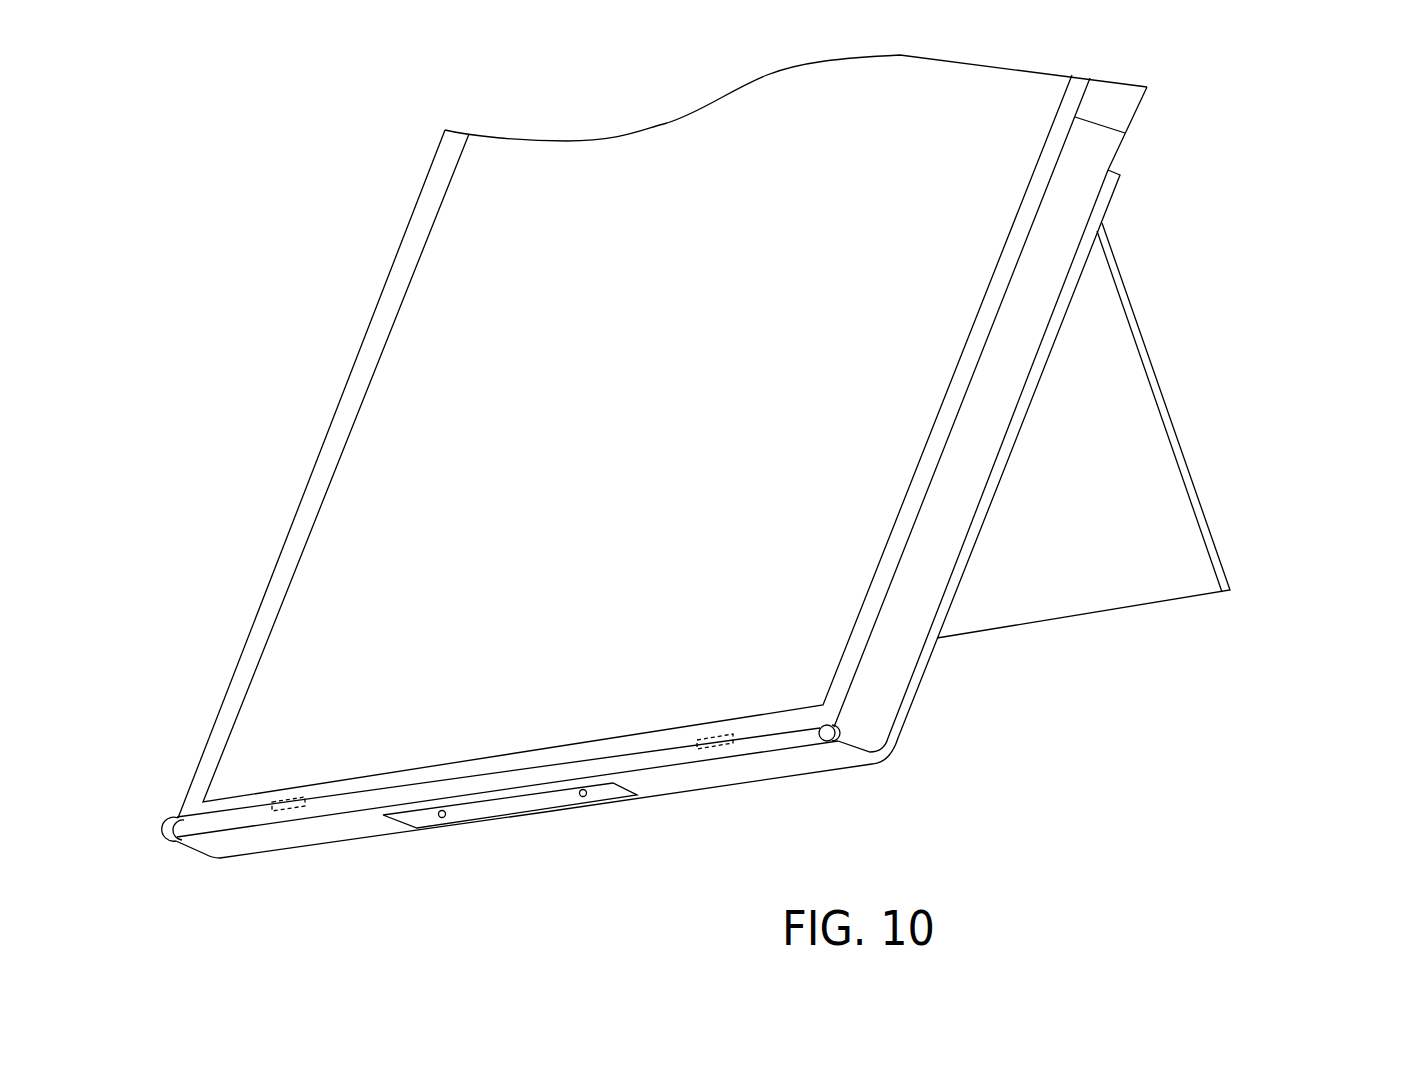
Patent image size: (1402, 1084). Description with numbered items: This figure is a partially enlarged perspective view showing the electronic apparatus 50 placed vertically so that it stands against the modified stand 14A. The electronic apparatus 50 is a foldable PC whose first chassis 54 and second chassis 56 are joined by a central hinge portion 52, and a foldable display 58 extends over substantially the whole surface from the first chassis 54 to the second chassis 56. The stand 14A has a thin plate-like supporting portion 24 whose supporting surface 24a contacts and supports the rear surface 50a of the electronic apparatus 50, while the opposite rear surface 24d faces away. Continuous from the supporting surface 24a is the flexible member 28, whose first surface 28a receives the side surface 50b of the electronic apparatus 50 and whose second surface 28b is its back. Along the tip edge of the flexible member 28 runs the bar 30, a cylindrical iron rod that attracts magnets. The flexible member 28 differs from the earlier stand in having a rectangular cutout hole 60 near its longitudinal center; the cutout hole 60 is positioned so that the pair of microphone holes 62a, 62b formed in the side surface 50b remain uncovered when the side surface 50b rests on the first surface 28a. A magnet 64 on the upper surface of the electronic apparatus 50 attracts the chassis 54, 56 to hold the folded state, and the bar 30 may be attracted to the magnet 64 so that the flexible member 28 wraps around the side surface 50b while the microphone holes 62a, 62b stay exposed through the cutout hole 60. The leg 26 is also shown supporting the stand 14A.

The stand 14A is at (1228, 428).
The supporting portion 24 is at (1070, 320).
The supporting surface 24a is at (942, 595).
The rear surface 24d is at (918, 687).
The support leg 26 is at (1212, 517).
The flexible member 28 is at (316, 838).
The first surface 28a is at (858, 743).
The second surface 28b is at (253, 843).
The bar 30 is at (208, 827).
The electronic apparatus 50 is at (388, 224).
The rear surface 50a is at (982, 495).
The side surface 50b is at (515, 803).
The hinge portion 52 is at (1097, 125).
The first chassis 54 is at (1140, 107).
The second chassis 56 is at (1015, 416).
The display 58 is at (420, 397).
The cutout hole 60 is at (622, 801).
The microphone hole 62a is at (442, 820).
The microphone hole 62b is at (583, 800).
The magnet 64 is at (296, 797).